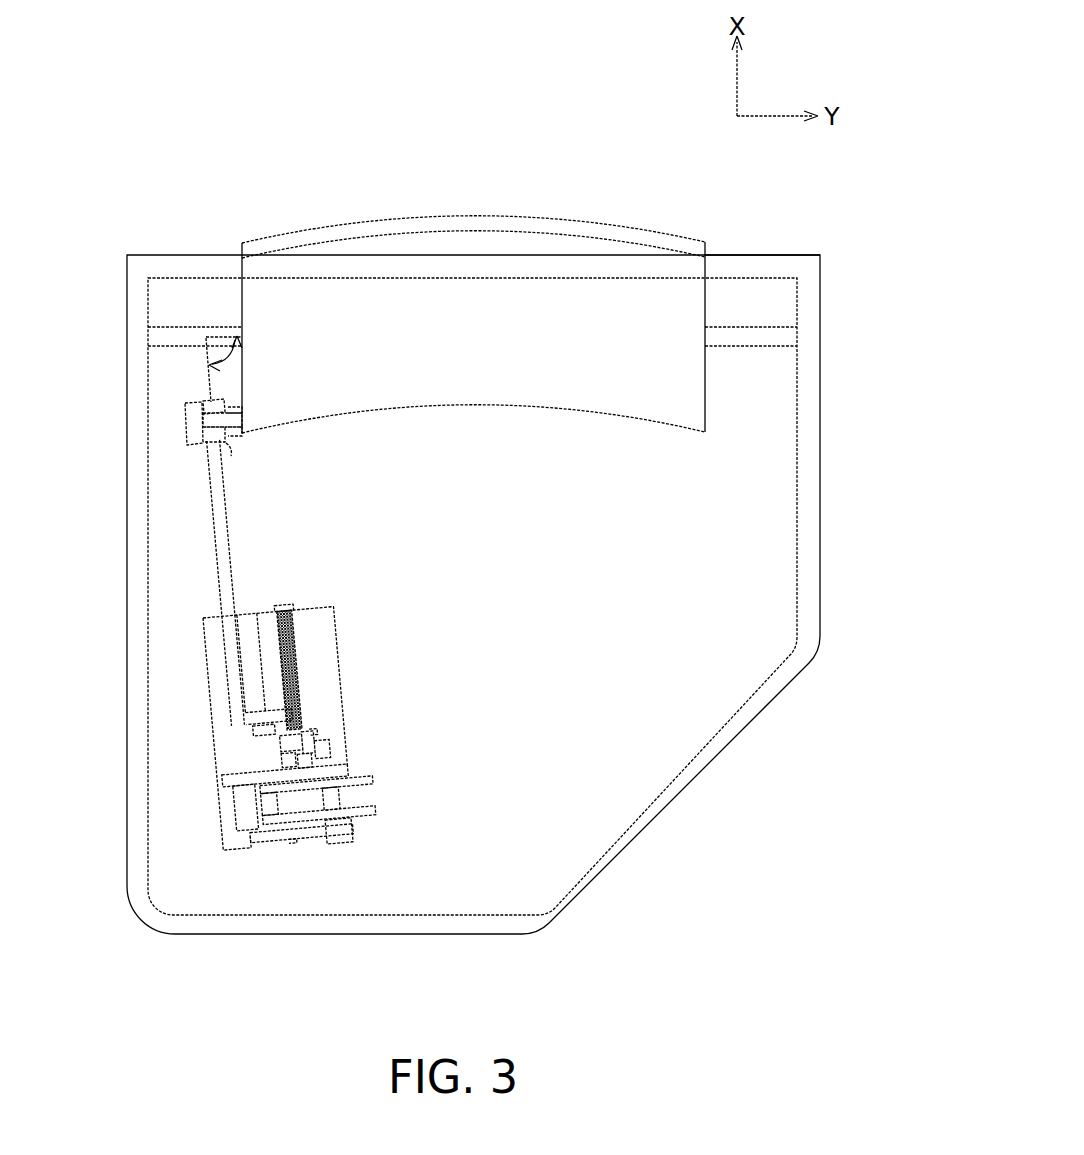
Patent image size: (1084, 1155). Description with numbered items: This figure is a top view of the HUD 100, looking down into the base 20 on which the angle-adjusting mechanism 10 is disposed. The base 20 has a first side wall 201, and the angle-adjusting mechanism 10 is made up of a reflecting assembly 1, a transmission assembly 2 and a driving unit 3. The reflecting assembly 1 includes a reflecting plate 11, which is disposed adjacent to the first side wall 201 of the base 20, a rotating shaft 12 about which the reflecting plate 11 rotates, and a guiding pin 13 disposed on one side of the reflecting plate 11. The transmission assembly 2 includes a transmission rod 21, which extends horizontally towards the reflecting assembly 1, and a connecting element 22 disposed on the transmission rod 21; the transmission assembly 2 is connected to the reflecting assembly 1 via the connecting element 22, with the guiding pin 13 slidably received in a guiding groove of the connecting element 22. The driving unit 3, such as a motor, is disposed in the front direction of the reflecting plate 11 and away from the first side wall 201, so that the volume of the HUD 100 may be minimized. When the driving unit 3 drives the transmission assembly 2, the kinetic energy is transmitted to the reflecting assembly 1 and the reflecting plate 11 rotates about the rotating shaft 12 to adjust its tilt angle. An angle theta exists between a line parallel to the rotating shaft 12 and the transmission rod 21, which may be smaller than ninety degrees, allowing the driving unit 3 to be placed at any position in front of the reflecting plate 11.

The HUD 100 is at (92, 121).
The first side wall 201 is at (764, 254).
The base 20 is at (748, 762).
The angle-adjusting mechanism 10 is at (455, 603).
The reflecting assembly 1 is at (56, 315).
The reflecting plate 11 is at (253, 304).
The rotating shaft 12 is at (177, 338).
The guiding pin 13 is at (216, 419).
The transmission assembly 2 is at (56, 458).
The connecting element 22 is at (232, 447).
The transmission rod 21 is at (221, 543).
The driving unit 3 is at (243, 820).